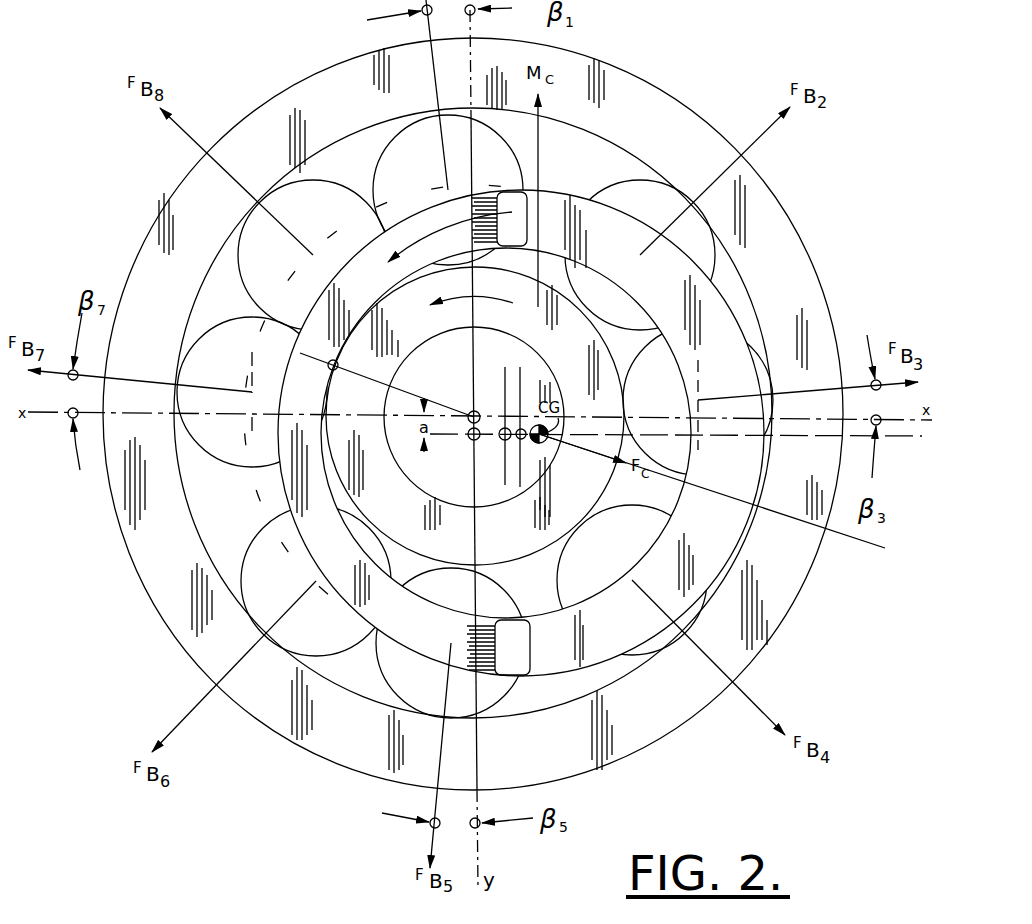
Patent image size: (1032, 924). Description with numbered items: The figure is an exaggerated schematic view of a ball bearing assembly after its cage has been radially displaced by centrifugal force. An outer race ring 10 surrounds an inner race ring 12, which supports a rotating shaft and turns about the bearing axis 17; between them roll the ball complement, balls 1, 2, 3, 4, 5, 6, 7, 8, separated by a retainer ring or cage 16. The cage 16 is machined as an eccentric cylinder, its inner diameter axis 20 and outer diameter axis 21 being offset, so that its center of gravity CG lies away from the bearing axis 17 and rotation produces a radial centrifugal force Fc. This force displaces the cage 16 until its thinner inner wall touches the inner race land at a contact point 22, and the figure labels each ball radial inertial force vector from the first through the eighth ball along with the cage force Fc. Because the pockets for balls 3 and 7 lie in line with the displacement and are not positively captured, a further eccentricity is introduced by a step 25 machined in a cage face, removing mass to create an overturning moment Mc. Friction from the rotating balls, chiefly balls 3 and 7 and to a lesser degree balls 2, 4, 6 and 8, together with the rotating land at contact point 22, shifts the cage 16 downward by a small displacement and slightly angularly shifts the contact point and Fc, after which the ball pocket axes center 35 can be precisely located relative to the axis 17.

The ball 1 is at (423, 152).
The ball 2 is at (645, 203).
The ball 3 is at (698, 400).
The ball 4 is at (580, 587).
The ball 5 is at (405, 668).
The ball 6 is at (276, 552).
The ball 7 is at (218, 359).
The ball 8 is at (308, 212).
The outer race ring 10 is at (131, 557).
The inner race ring 12 is at (413, 330).
The retainer ring or cage 16 is at (684, 498).
The bearing axis 17 is at (474, 411).
The inner diameter axis 20 is at (505, 428).
The outer diameter axis 21 is at (521, 429).
The contact point 22 is at (333, 370).
The step 25 is at (498, 620).
The ball pocket axes center 35 is at (470, 440).